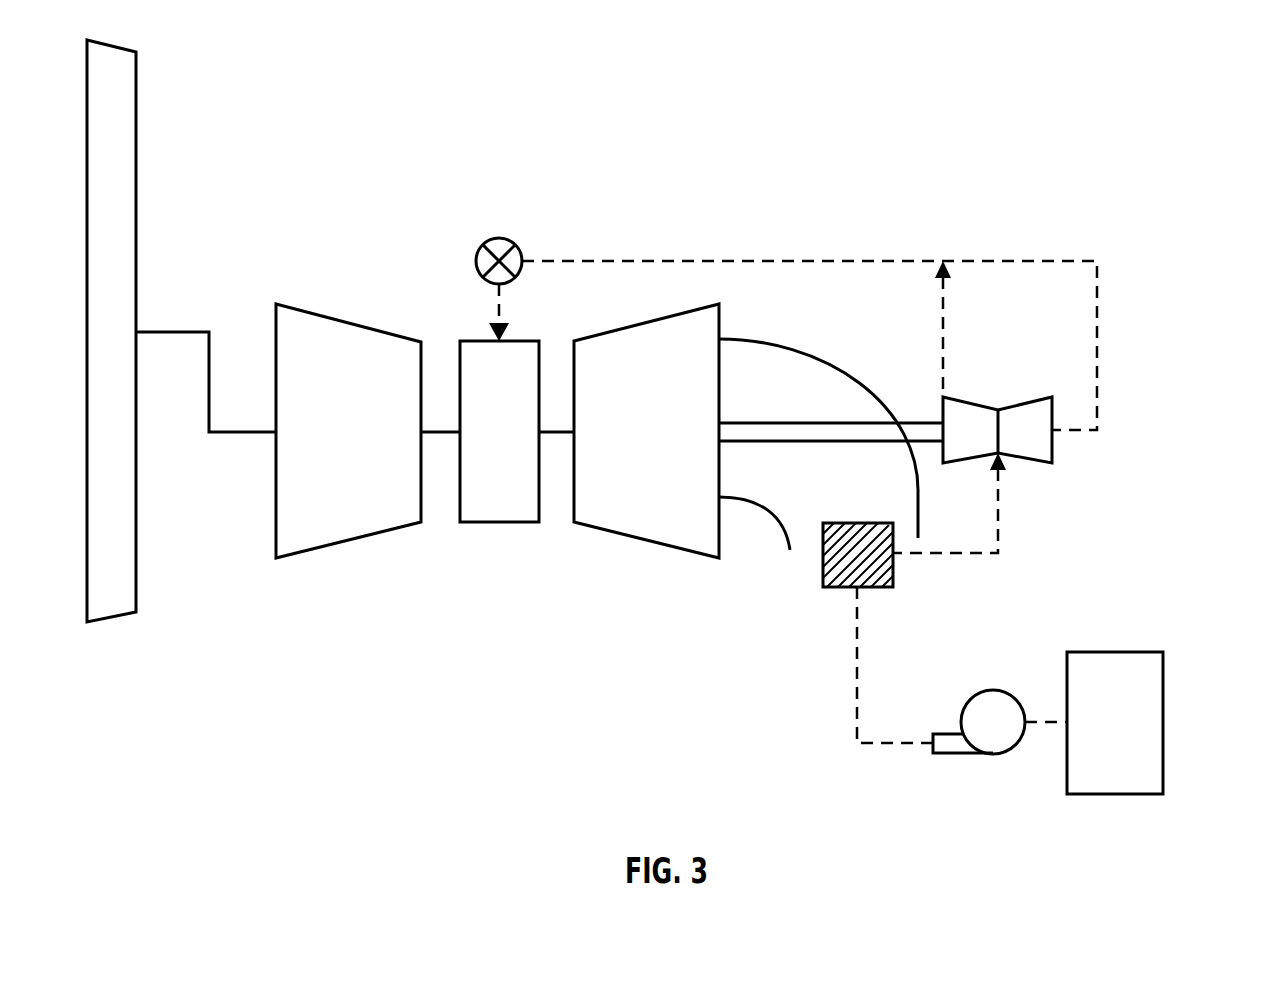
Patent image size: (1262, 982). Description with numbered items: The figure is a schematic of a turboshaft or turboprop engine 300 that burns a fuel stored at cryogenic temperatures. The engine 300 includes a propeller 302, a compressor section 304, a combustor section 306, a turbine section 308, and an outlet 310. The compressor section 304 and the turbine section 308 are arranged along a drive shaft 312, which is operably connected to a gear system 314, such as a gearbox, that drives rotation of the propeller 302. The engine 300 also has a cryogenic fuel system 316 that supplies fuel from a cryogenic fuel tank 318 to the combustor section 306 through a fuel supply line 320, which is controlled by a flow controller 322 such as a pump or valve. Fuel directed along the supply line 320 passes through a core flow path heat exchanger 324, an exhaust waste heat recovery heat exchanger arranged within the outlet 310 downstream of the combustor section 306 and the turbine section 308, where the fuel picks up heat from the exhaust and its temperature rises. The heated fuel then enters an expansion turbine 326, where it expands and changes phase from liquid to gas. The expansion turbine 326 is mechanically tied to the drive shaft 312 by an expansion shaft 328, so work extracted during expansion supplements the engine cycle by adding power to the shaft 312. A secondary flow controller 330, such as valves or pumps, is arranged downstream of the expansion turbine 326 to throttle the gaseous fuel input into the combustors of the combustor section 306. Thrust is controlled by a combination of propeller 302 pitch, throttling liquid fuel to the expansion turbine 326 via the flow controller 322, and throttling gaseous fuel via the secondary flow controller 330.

The turboshaft or turboprop engine 300 is at (1027, 128).
The propeller 302 is at (137, 137).
The compressor section 304 is at (347, 542).
The combustor section 306 is at (500, 523).
The turbine section 308 is at (633, 538).
The outlet 310 is at (788, 498).
The drive shaft 312 is at (428, 434).
The gear system 314 is at (237, 433).
The cryogenic fuel system 316 is at (1112, 564).
The cryogenic fuel tank 318 is at (1164, 715).
The fuel supply line 320 is at (693, 260).
The flow controller 322 is at (983, 750).
The core flow path heat exchanger 324 is at (882, 588).
The expansion turbine 326 is at (1028, 462).
The expansion shaft 328 is at (770, 430).
The secondary flow controller 330 is at (497, 237).